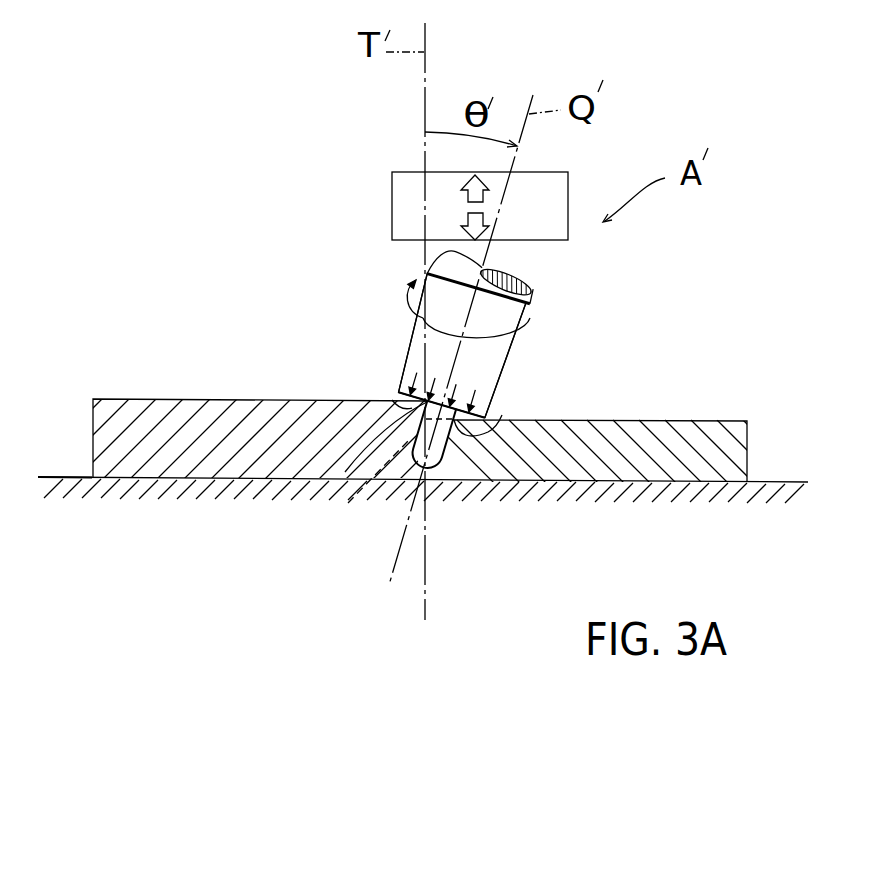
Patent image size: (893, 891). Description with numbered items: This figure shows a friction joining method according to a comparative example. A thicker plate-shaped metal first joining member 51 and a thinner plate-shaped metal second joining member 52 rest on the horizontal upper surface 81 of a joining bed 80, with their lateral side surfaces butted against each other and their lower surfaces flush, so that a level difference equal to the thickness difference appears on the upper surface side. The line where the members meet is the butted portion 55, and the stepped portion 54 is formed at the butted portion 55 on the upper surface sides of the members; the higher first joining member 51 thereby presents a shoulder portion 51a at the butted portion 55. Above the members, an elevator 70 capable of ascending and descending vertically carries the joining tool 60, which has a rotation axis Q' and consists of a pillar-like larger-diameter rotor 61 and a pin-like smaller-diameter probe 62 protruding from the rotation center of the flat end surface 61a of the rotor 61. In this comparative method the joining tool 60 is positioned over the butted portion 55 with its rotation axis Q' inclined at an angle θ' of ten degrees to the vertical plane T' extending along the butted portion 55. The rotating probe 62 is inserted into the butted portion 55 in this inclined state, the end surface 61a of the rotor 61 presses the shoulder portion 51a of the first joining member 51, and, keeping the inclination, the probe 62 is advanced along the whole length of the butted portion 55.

The first joining member 51 is at (147, 420).
The shoulder portion 51a is at (392, 400).
The second joining member 52 is at (657, 445).
The stepped portion 54 is at (352, 464).
The butted portion 55 is at (359, 489).
The joining tool 60 is at (411, 327).
The rotor 61 is at (409, 354).
The end surface of the rotor 61a is at (492, 418).
The probe 62 is at (450, 442).
The elevator 70 is at (393, 200).
The joining bed 80 is at (781, 502).
The upper surface of the joining bed 81 is at (72, 475).